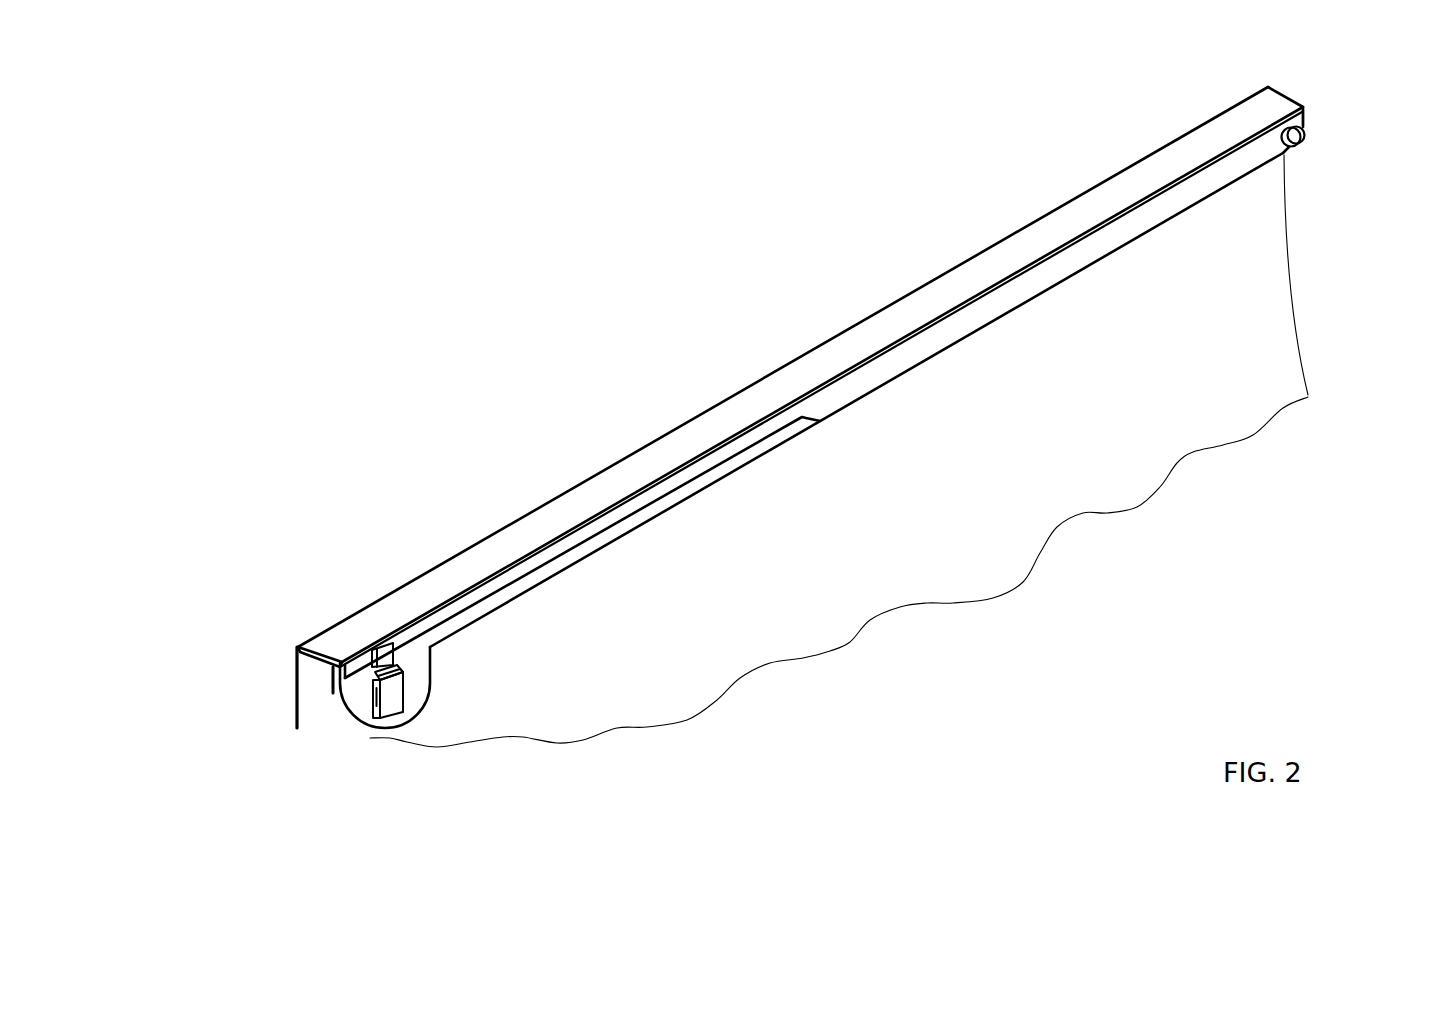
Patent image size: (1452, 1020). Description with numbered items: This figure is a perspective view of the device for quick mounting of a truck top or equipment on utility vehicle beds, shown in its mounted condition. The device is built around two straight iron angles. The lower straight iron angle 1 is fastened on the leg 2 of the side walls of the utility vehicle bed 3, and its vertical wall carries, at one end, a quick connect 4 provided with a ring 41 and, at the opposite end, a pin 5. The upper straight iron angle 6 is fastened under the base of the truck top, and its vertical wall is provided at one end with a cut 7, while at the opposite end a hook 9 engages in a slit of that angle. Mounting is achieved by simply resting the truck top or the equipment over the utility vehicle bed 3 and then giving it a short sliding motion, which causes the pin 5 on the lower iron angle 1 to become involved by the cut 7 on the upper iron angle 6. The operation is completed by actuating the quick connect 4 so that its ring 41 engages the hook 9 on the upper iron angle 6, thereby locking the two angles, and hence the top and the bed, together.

The lower straight iron angle 1 is at (508, 598).
The leg 2 is at (327, 656).
The utility vehicle bed 3 is at (1220, 298).
The quick connect 4 is at (392, 722).
The ring 41 is at (375, 705).
The pin 5 is at (1302, 141).
The upper straight iron angle 6 is at (997, 262).
The cut 7 is at (1303, 122).
The hook 9 is at (383, 658).